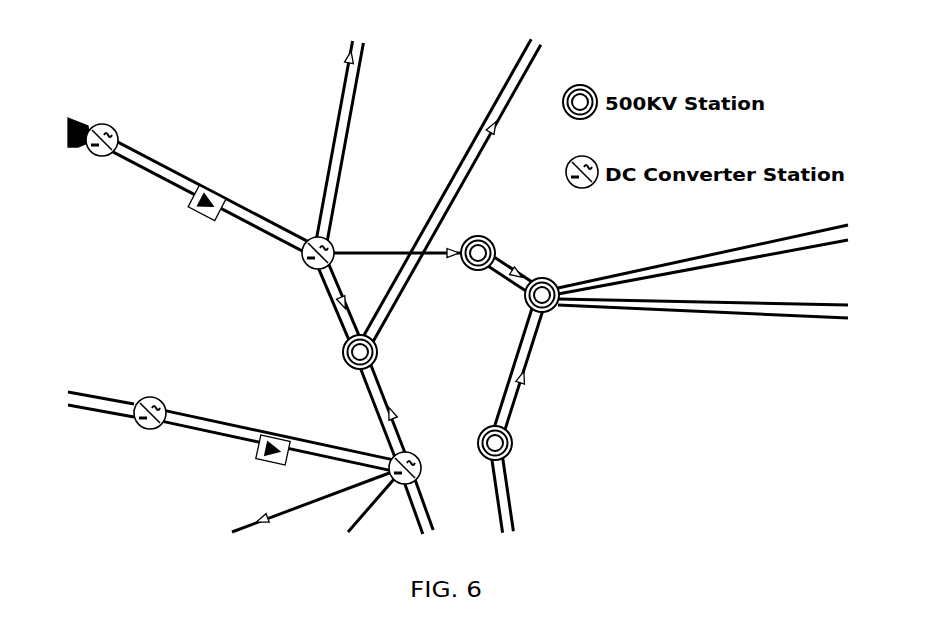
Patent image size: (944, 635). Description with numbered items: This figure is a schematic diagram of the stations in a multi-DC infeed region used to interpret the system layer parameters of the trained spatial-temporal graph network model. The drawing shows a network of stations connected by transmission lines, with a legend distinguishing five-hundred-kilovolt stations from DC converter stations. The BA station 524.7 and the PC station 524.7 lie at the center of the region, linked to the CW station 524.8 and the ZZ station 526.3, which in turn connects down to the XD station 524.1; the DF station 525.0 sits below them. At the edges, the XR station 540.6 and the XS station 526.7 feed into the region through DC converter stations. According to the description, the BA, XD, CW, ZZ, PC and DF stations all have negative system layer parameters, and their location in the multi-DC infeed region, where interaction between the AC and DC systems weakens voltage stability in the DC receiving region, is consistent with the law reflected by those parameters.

The XR DC converter station 540.6 is at (127, 117).
The BA DC converter station / PC 500KV station 524.7 is at (320, 312).
The CW 500KV station 524.8 is at (455, 282).
The ZZ 500KV station 526.3 is at (565, 323).
The XD 500KV station 524.1 is at (531, 439).
The DF DC converter station 525.0 is at (426, 448).
The XS DC converter station 526.7 is at (144, 380).